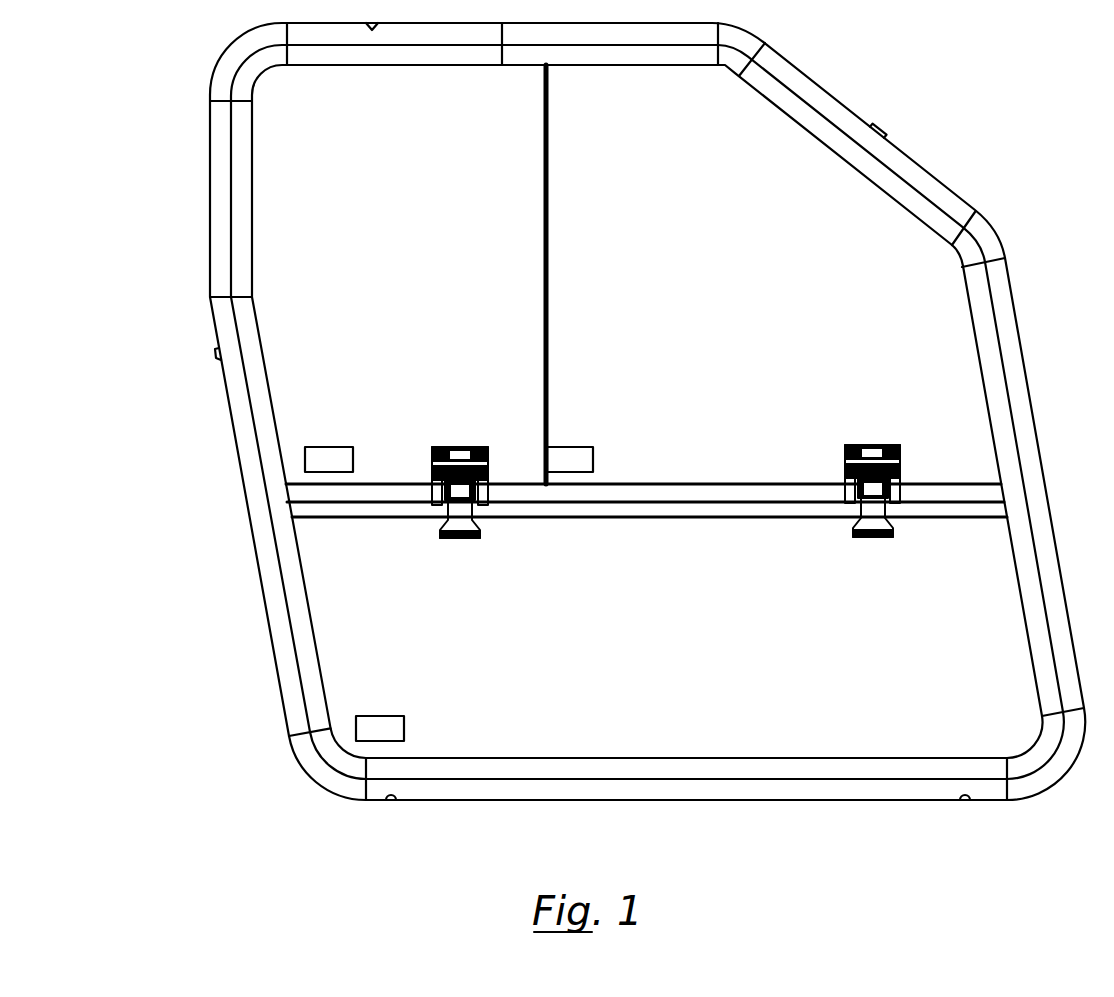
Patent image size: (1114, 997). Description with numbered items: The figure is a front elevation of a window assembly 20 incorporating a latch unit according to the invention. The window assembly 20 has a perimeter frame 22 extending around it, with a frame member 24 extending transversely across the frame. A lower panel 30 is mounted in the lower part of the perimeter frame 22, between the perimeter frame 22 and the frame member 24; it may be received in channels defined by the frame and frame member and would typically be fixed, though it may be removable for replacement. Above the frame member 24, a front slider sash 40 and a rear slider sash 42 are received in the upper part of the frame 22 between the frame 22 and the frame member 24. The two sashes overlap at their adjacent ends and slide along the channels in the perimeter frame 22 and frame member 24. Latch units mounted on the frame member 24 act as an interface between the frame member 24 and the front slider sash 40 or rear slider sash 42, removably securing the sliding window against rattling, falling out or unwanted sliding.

The window assembly 20 is at (649, 411).
The perimeter frame 22 is at (998, 312).
The frame member 24 is at (678, 492).
The lower panel 30 is at (680, 661).
The front slider sash 40 is at (396, 345).
The rear slider sash 42 is at (740, 339).